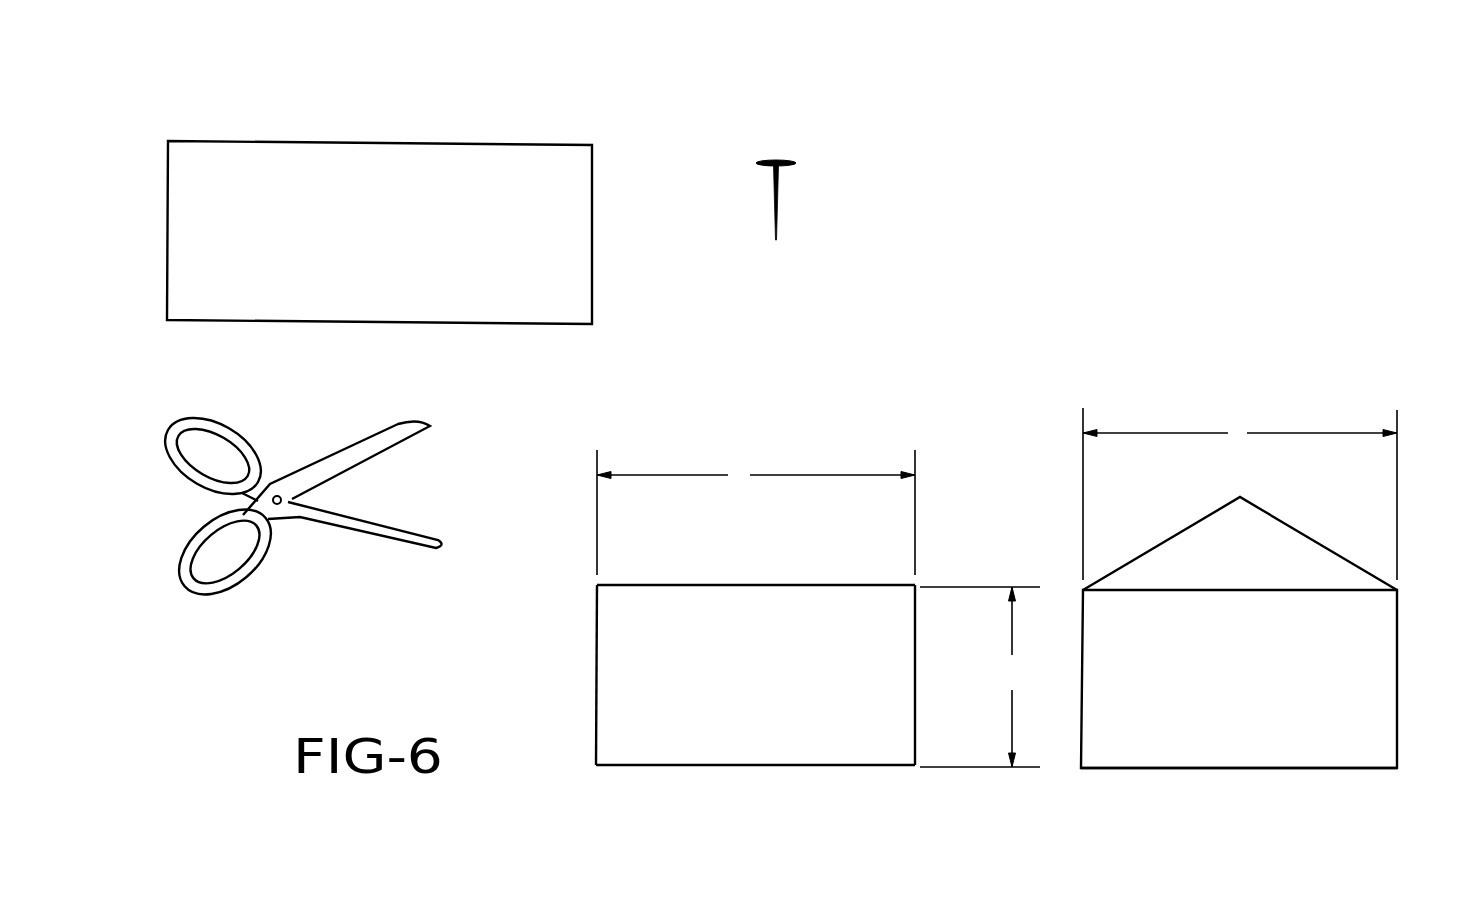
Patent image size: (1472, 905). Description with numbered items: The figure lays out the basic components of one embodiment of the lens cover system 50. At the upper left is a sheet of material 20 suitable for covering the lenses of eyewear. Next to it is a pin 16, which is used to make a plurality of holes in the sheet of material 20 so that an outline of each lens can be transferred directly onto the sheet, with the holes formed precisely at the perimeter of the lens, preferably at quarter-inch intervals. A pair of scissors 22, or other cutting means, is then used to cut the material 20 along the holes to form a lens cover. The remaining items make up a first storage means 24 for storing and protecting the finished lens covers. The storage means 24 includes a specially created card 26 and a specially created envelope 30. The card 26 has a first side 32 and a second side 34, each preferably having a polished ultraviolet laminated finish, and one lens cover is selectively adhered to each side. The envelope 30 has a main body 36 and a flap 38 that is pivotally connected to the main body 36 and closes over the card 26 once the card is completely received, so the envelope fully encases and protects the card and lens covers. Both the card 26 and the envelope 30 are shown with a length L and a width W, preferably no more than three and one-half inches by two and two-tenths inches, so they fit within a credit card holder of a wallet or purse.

The pin 16 is at (778, 192).
The sheet of material 20 is at (302, 172).
The pair of scissors 22 is at (218, 587).
The first storage means 24 is at (747, 608).
The card 26 is at (703, 585).
The envelope 30 is at (1266, 605).
The first side 32 is at (835, 667).
The second side 34 is at (640, 630).
The main body 36 is at (1363, 770).
The flap 38 is at (1308, 538).
The lens cover system 50 is at (730, 112).